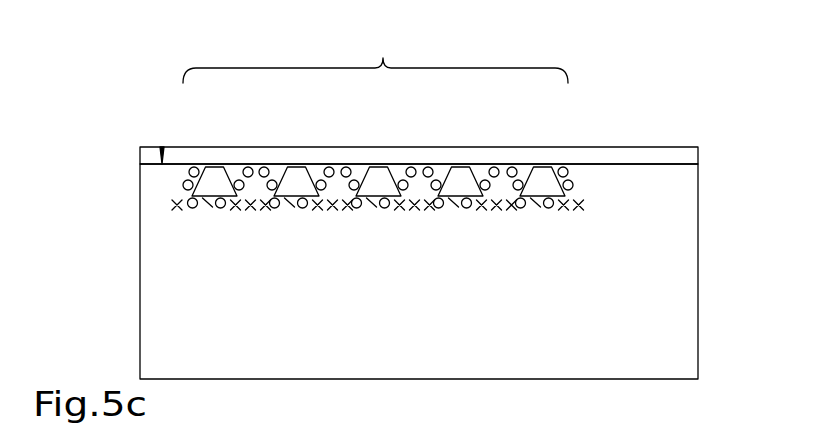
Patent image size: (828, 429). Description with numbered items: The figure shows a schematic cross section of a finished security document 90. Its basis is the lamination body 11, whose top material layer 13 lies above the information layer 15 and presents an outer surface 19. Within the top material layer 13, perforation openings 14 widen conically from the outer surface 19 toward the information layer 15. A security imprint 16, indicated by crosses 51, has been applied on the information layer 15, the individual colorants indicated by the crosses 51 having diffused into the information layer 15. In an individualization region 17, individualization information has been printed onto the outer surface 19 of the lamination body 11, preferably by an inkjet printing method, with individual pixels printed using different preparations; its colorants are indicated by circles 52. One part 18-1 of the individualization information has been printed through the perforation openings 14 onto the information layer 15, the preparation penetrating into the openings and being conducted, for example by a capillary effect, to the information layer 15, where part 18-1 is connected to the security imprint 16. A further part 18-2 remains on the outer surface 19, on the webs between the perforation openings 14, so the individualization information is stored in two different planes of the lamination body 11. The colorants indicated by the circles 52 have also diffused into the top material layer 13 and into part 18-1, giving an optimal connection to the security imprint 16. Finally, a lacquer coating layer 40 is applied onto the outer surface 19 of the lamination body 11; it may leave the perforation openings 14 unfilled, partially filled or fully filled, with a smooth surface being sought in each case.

The lamination body 11 is at (222, 370).
The top material layer 13 is at (115, 182).
The perforation openings 14 is at (298, 167).
The information layer 15 is at (113, 207).
The security imprint 16 is at (176, 211).
The individualization region 17 is at (375, 51).
The part of the individualization information 18-1 is at (220, 209).
The further part of the individualization information 18-2 is at (249, 167).
The outer surface 19 is at (162, 147).
The lacquer coating layer 40 is at (655, 153).
The crosses 51 is at (509, 211).
The circles 52 is at (495, 167).
The security document 90 is at (493, 383).